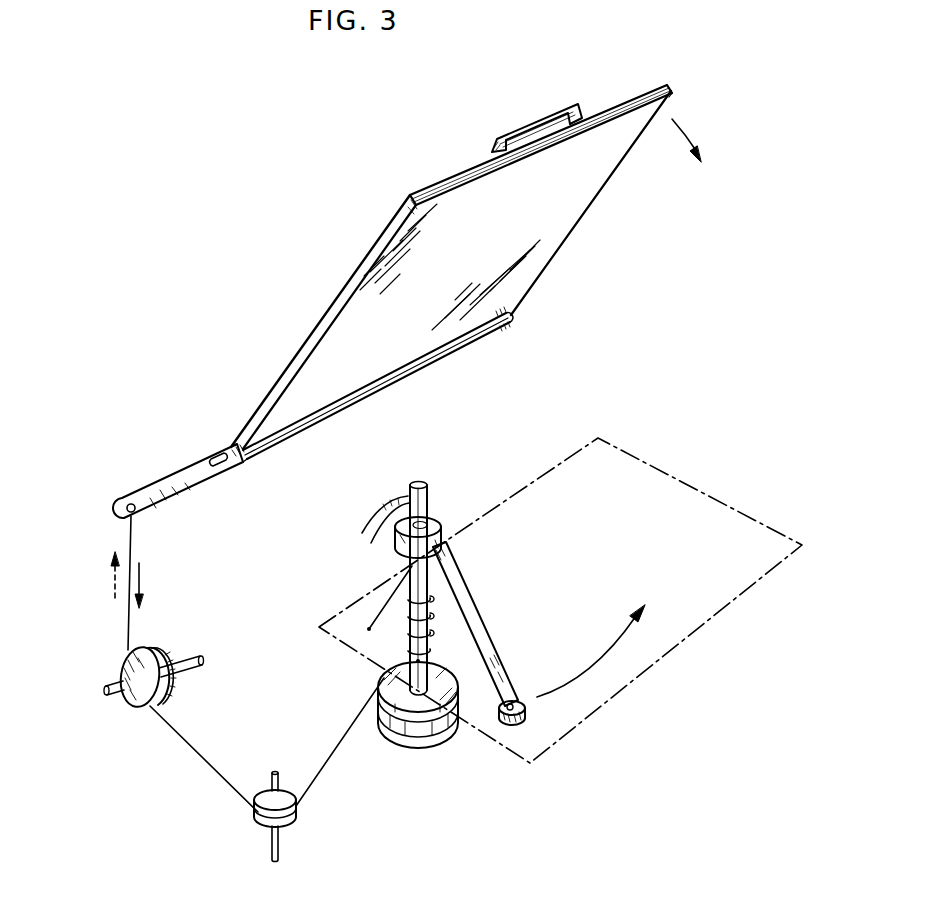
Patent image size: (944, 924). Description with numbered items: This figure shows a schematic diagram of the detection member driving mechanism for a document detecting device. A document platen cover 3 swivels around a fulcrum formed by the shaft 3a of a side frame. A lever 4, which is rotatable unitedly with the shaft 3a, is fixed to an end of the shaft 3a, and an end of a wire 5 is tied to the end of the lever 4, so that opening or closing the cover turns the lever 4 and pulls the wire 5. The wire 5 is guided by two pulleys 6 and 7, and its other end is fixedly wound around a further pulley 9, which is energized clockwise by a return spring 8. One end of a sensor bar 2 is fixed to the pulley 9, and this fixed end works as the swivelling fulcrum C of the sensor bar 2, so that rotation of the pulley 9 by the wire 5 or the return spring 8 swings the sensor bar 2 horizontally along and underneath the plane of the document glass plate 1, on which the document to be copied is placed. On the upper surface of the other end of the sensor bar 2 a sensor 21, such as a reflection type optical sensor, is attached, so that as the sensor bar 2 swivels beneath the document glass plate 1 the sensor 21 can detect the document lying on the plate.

The document glass plate 1 is at (560, 600).
The sensor bar 2 is at (489, 660).
The document platen cover 3 is at (565, 210).
The shaft 3a is at (513, 326).
The lever 4 is at (181, 478).
The wire 5 is at (193, 757).
The pulley 6 is at (124, 668).
The pulley 7 is at (262, 808).
The return spring 8 is at (391, 617).
The pulley 9 is at (392, 730).
The sensor 21 is at (520, 718).
The fulcrum C is at (427, 519).